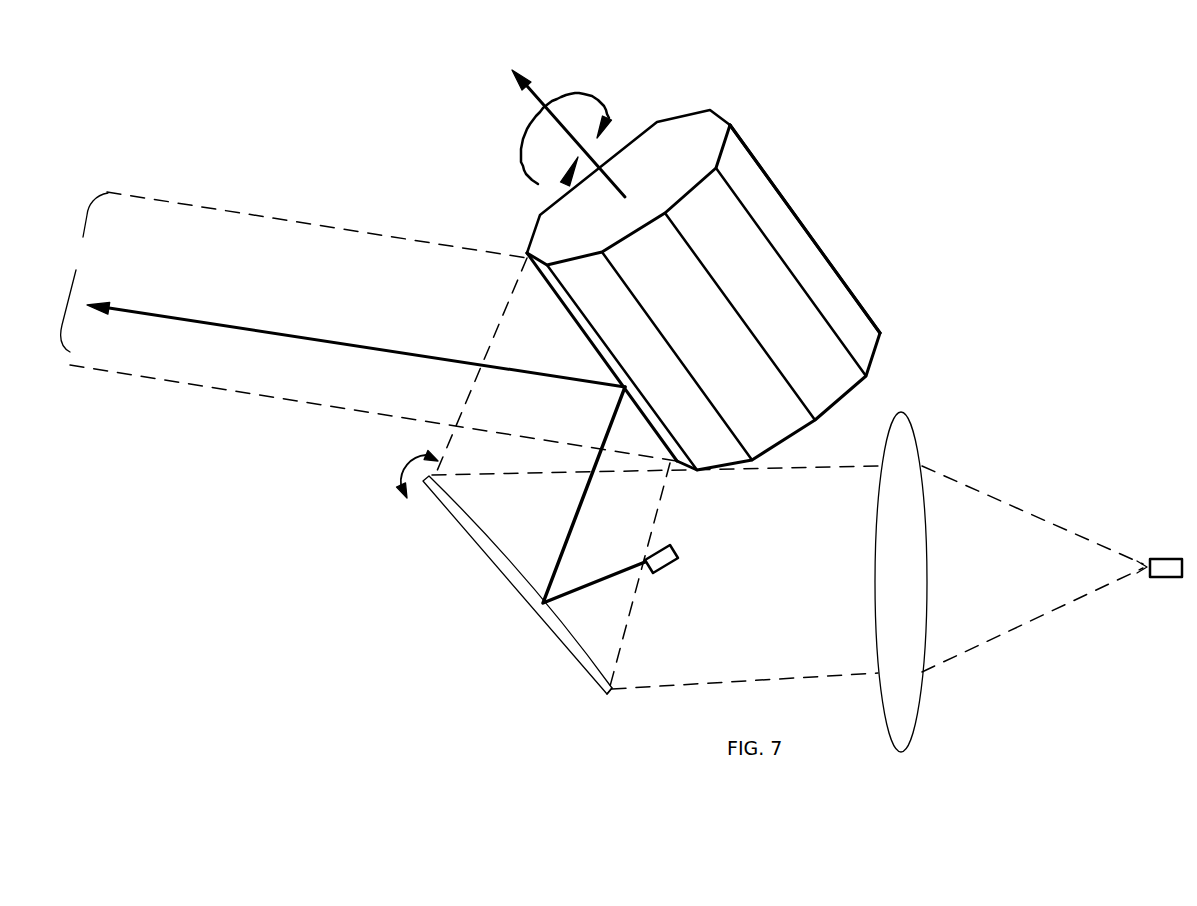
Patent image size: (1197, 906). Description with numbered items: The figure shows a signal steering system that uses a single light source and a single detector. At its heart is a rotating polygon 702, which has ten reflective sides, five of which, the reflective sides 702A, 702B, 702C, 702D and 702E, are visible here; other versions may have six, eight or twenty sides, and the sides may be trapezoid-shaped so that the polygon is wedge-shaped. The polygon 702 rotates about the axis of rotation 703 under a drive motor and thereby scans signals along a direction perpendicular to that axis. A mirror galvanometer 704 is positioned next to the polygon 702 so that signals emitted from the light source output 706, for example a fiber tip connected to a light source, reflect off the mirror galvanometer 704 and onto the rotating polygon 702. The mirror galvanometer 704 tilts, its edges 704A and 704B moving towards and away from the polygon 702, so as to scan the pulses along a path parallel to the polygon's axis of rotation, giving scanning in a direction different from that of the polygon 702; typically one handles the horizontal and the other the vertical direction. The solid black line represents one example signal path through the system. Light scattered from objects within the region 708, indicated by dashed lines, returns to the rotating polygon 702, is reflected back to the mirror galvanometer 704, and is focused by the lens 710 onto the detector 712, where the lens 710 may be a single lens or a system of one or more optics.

The polygon 702 is at (715, 290).
The reflective side 702A is at (587, 337).
The reflective side 702B is at (723, 440).
The reflective side 702C is at (781, 411).
The reflective side 702D is at (836, 366).
The reflective side 702E is at (847, 293).
The axis of rotation 703 is at (564, 133).
The mirror galvanometer 704 is at (471, 588).
The edge of mirror galvanometer 704A is at (425, 492).
The edge of mirror galvanometer 704B is at (603, 697).
The light source output 706 is at (703, 545).
The region 708 is at (367, 335).
The lens 710 is at (915, 580).
The detector 712 is at (1161, 552).